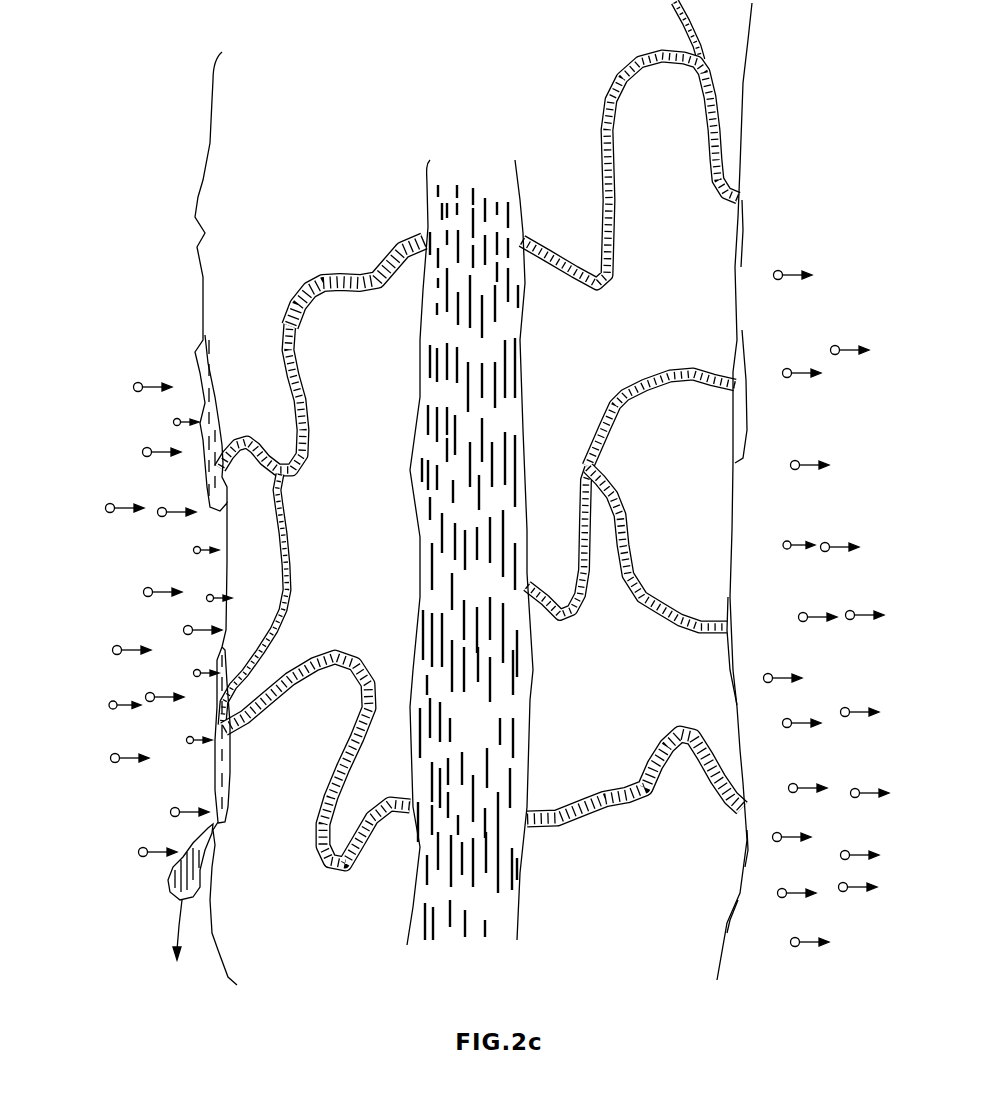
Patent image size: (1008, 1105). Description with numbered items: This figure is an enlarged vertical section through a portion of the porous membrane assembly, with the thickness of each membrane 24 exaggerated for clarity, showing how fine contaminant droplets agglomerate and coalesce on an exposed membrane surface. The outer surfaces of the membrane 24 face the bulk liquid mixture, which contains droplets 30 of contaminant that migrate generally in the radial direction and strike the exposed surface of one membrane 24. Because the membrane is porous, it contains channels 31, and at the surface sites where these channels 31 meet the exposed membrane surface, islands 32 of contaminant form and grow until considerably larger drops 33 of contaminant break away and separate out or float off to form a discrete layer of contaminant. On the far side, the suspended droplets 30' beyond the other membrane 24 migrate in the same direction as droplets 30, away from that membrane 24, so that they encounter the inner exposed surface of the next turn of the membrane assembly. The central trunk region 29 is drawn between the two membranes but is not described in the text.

The membrane 24 is at (337, 530).
The fiber 29 is at (486, 742).
The droplets of contaminant 30 is at (144, 620).
The suspended droplets 30' is at (844, 609).
The channels 31 is at (331, 276).
The islands of contaminant 32 is at (205, 393).
The drops of contaminant 33 is at (196, 872).